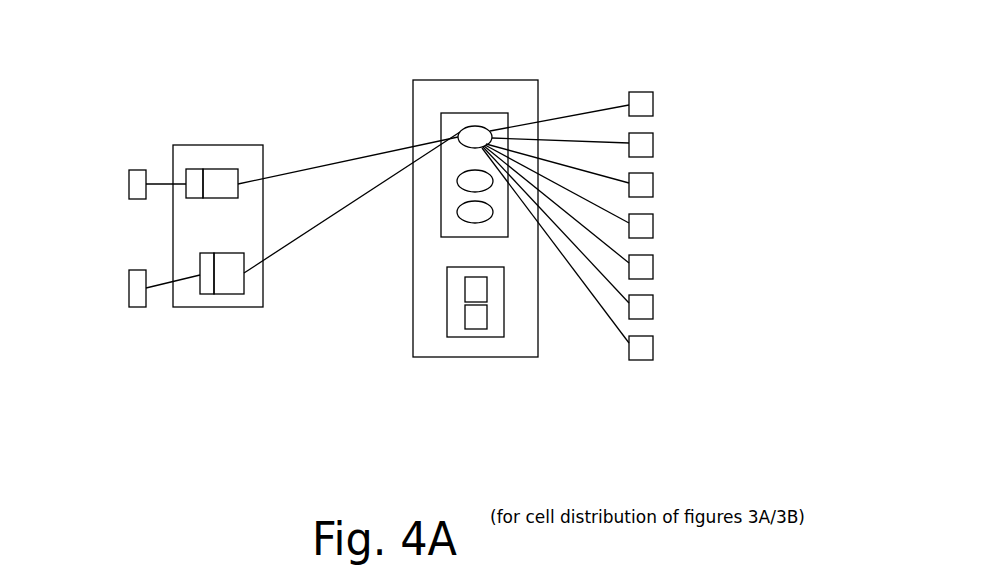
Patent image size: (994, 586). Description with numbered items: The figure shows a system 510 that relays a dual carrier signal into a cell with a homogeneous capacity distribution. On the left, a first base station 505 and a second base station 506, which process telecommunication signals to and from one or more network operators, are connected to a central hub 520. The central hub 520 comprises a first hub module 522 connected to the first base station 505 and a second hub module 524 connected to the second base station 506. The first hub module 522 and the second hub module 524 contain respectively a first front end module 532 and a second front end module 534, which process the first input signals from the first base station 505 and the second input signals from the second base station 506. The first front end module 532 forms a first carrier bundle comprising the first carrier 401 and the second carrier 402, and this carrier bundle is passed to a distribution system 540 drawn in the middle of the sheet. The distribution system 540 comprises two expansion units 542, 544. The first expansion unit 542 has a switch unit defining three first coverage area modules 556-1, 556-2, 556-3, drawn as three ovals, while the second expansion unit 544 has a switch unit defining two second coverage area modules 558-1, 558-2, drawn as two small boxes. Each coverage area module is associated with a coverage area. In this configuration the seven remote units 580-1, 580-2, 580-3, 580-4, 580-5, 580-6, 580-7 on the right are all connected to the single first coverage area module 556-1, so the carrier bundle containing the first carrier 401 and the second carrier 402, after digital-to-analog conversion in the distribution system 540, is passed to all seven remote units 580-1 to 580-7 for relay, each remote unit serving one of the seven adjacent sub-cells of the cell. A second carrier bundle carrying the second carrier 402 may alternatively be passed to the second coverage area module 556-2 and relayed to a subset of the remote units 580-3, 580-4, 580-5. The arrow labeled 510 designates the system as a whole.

The first base station 505 is at (127, 185).
The second base station 506 is at (127, 290).
The central hub 520 is at (190, 145).
The first hub module 522 is at (230, 170).
The first front end module 532 is at (187, 193).
The second front end module 534 is at (207, 294).
The second hub module 524 is at (235, 295).
The first carrier 401 is at (333, 160).
The second carrier 402 is at (320, 222).
The distribution system 540 is at (483, 87).
The first expansion unit 542 is at (449, 110).
The first coverage area module 556-1 is at (476, 126).
The second coverage area module 556-2 is at (458, 188).
The third coverage area module 556-3 is at (460, 220).
The second expansion unit 544 is at (458, 337).
The second coverage area module 558-1 is at (487, 295).
The second coverage area module 558-2 is at (487, 323).
The remote unit 580-1 is at (653, 103).
The remote unit 580-2 is at (653, 144).
The remote unit 580-3 is at (653, 184).
The remote unit 580-4 is at (653, 225).
The remote unit 580-5 is at (653, 266).
The remote unit 580-6 is at (653, 306).
The remote unit 580-7 is at (653, 347).
The system 510 is at (537, 430).